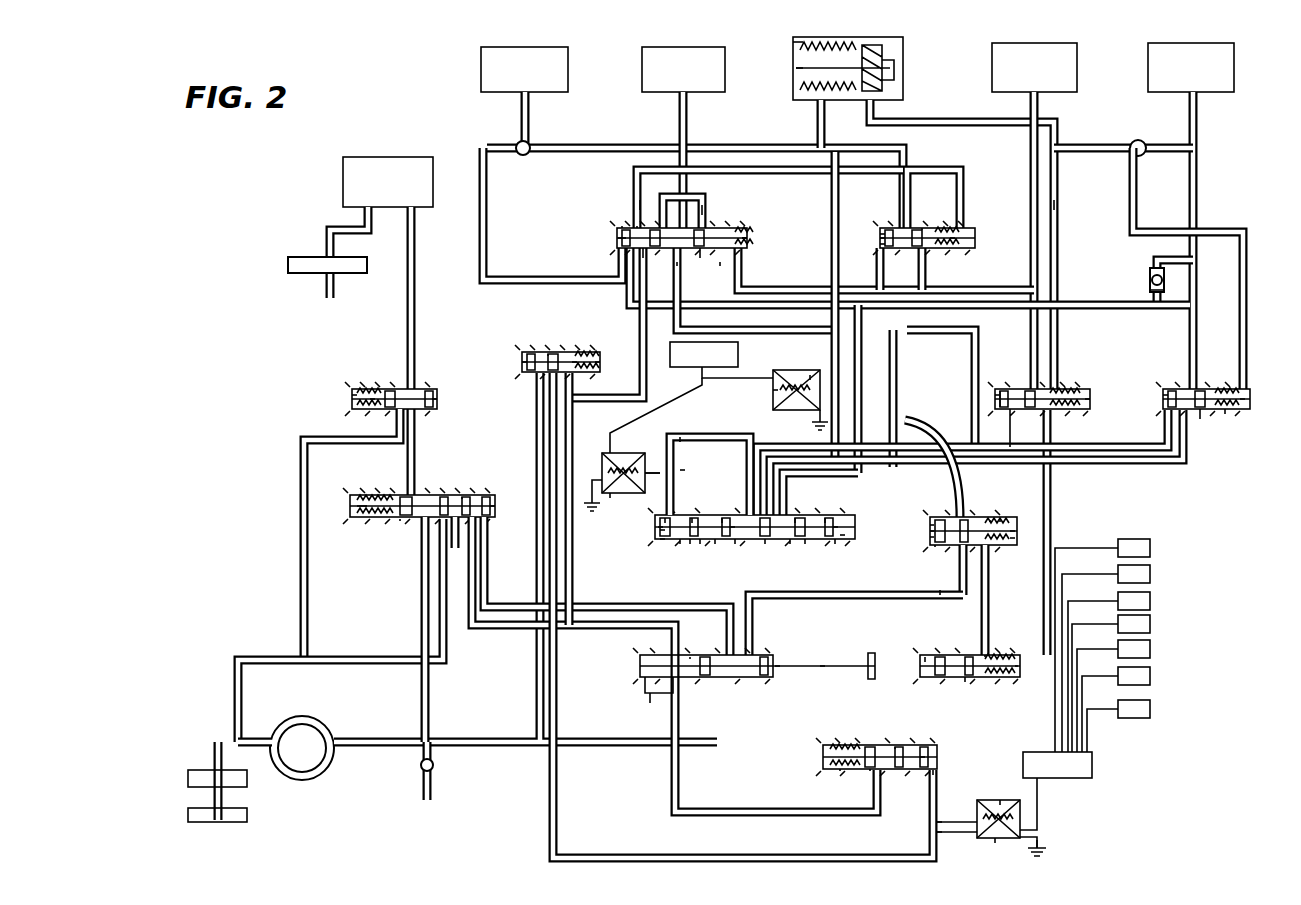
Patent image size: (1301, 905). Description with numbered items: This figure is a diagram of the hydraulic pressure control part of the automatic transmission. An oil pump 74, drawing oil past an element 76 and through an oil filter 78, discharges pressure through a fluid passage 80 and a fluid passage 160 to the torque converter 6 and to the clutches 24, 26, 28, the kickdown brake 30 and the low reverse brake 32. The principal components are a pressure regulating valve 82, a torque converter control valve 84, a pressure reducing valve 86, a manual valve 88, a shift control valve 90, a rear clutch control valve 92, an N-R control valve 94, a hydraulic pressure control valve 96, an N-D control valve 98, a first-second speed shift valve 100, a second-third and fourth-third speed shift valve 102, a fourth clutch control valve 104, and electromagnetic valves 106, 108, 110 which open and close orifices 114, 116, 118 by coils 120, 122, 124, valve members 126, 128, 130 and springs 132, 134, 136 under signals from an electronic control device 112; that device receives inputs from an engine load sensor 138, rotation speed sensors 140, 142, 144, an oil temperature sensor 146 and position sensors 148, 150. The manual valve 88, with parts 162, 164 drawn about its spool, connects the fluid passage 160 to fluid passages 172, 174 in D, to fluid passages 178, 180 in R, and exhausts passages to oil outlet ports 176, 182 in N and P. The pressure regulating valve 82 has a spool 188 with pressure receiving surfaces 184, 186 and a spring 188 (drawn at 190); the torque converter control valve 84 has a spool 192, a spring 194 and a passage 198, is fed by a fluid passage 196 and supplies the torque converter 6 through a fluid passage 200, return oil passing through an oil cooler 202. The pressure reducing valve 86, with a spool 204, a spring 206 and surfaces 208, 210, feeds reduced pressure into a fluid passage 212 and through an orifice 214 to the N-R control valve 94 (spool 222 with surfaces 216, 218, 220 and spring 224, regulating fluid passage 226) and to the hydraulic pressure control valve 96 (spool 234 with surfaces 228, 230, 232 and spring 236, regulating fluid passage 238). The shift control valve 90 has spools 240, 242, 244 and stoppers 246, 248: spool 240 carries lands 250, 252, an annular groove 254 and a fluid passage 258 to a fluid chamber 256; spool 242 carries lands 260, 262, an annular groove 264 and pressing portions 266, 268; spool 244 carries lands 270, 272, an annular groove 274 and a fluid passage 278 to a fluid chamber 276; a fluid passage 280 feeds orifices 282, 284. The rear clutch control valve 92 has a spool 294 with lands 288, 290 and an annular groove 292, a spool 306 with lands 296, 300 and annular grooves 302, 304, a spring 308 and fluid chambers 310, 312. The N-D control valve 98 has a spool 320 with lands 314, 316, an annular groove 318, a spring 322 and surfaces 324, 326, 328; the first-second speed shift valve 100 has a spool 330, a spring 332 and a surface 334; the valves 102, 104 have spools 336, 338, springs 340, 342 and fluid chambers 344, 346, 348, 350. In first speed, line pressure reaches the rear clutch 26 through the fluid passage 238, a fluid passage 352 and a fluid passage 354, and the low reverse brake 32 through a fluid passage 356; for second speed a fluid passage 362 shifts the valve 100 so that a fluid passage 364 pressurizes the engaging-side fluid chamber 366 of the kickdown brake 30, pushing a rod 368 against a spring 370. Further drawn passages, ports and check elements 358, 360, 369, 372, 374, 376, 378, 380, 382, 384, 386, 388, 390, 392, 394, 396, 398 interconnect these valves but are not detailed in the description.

The torque converter 6 is at (388, 182).
The clutch 24 is at (568, 70).
The rear clutch 26 is at (725, 66).
The clutch 28 is at (1148, 68).
The kickdown brake 30 is at (897, 45).
The low reverse brake 32 is at (992, 62).
The oil pump 74 is at (305, 775).
The reservoir 76 is at (200, 822).
The oil filter 78 is at (188, 776).
The fluid passage 80 is at (230, 732).
The pressure regulating valve 82 is at (428, 485).
The torque converter control valve 84 is at (427, 375).
The pressure reducing valve 86 is at (520, 345).
The manual valve 88 is at (753, 652).
The shift control valve 90 is at (832, 546).
The rear clutch control valve 92 is at (740, 223).
The N-R control valve 94 is at (822, 755).
The hydraulic pressure control valve 96 is at (1022, 648).
The N-D control valve 98 is at (1018, 510).
The first-second speed shift valve 100 is at (1090, 372).
The second-third and fourth-third speed shift valve 102 is at (977, 225).
The fourth clutch control valve 104 is at (1254, 390).
The electromagnetic valve 106 is at (1000, 845).
The electromagnetic valve 108 is at (795, 365).
The electromagnetic valve 110 is at (598, 517).
The electronic control device 112 is at (881, 599).
The orifice 114 is at (963, 832).
The orifice 116 is at (766, 398).
The orifice 118 is at (655, 465).
The coil 120 is at (1040, 845).
The coil 122 is at (814, 363).
The coil 124 is at (630, 452).
The valve member 126 is at (975, 785).
The valve member 128 is at (755, 371).
The valve member 130 is at (622, 500).
The spring 132 is at (1010, 795).
The spring 134 is at (809, 420).
The spring 136 is at (620, 447).
The engine load sensor 138 is at (1150, 548).
The rotation speed sensor 140 is at (1150, 574).
The rotation speed sensor 142 is at (1150, 601).
The rotation speed sensor 144 is at (1150, 624).
The oil temperature sensor 146 is at (1150, 709).
The position sensor 148 is at (1150, 649).
The position sensor 150 is at (1150, 676).
The fluid passage 160 is at (400, 738).
The valve spool 162 is at (822, 680).
The valve bore 164 is at (695, 650).
The fluid passage 172 is at (745, 597).
The fluid passage 174 is at (605, 606).
The oil outlet port 176 is at (780, 654).
The fluid passage 178 is at (487, 242).
The fluid passage 180 is at (672, 728).
The oil outlet port 182 is at (647, 682).
The pressure receiving surface 184 is at (497, 497).
The pressure receiving surface 186 is at (465, 490).
The spool 188 is at (400, 540).
The spring 190 is at (368, 490).
The spool 192 is at (373, 385).
The spring 194 is at (350, 382).
The fluid passage 196 is at (410, 440).
The fluid passage 198 is at (440, 400).
The fluid passage 200 is at (405, 298).
The oil cooler 202 is at (305, 250).
The spool 204 is at (522, 364).
The spring 206 is at (600, 355).
The pressure receiving surface 208 is at (548, 350).
The pressure receiving surface 210 is at (573, 355).
The fluid passage 212 is at (550, 422).
The orifice 214 is at (934, 857).
The pressure receiving surface 216 is at (940, 752).
The pressure receiving surface 218 is at (917, 818).
The pressure receiving surface 220 is at (866, 782).
The spool 222 is at (880, 740).
The spring 224 is at (830, 770).
The fluid passage 226 is at (1018, 540).
The pressure receiving surface 228 is at (925, 652).
The pressure receiving surface 230 is at (940, 740).
The pressure receiving surface 232 is at (965, 688).
The spool 234 is at (999, 640).
The spring 236 is at (1020, 680).
The fluid passage 238 is at (771, 288).
The spool 240 is at (660, 544).
The spool 242 is at (715, 545).
The spool 244 is at (819, 554).
The stopper 246 is at (700, 550).
The stopper 248 is at (790, 555).
The land 250 is at (664, 501).
The land 252 is at (680, 550).
The annular groove 254 is at (697, 501).
The fluid chamber 256 is at (656, 518).
The fluid passage 258 is at (660, 533).
The land 260 is at (724, 508).
The land 262 is at (735, 550).
The annular groove 264 is at (729, 519).
The pressing portion 266 is at (690, 565).
The pressing portion 268 is at (765, 545).
The land 270 is at (802, 508).
The land 272 is at (835, 555).
The annular groove 274 is at (825, 505).
The fluid chamber 276 is at (852, 533).
The fluid passage 278 is at (835, 520).
The fluid passage 280 is at (740, 432).
The orifice 282 is at (704, 447).
The orifice 284 is at (724, 470).
The land 288 is at (620, 225).
The land 290 is at (648, 212).
The annular groove 292 is at (620, 284).
The spool 294 is at (632, 220).
The land 296 is at (642, 262).
The land 300 is at (716, 262).
The annular groove 302 is at (684, 281).
The annular groove 304 is at (710, 208).
The spool 306 is at (705, 190).
The spring 308 is at (748, 240).
The fluid chamber 310 is at (616, 237).
The fluid chamber 312 is at (746, 228).
The land 314 is at (937, 515).
The land 316 is at (1006, 504).
The annular groove 318 is at (1002, 496).
The spool 320 is at (935, 533).
The spring 322 is at (1018, 528).
The pressure receiving surface 324 is at (934, 545).
The pressure receiving surface 326 is at (934, 593).
The pressure receiving surface 328 is at (988, 600).
The spool 330 is at (1017, 380).
The spring 332 is at (1095, 402).
The pressure receiving surface 334 is at (993, 398).
The spool 336 is at (920, 227).
The spool 338 is at (1210, 420).
The spring 340 is at (925, 258).
The spring 342 is at (1232, 420).
The fluid chamber 344 is at (875, 233).
The fluid chamber 346 is at (1160, 387).
The fluid chamber 348 is at (960, 232).
The fluid chamber 350 is at (1250, 415).
The fluid passage 352 is at (730, 318).
The fluid passage 354 is at (680, 120).
The fluid passage 356 is at (1032, 100).
The port 358 is at (937, 497).
The passage 360 is at (927, 468).
The fluid passage 362 is at (1145, 440).
The fluid passage 364 is at (956, 120).
The engaging-side fluid chamber 366 is at (860, 112).
The rod 368 is at (796, 70).
The passage 369 is at (815, 491).
The spring 370 is at (795, 40).
The passage 372 is at (893, 345).
The port 374 is at (898, 271).
The passage 376 is at (620, 144).
The check valve 378 is at (1122, 128).
The passage 380 is at (1125, 202).
The passage 382 is at (805, 110).
The check valve 384 is at (533, 148).
The passage 386 is at (1198, 178).
The port 388 is at (1142, 300).
The check valve 390 is at (1140, 262).
The passage 392 is at (626, 168).
The port 394 is at (714, 279).
The port 396 is at (873, 240).
The port 398 is at (875, 250).